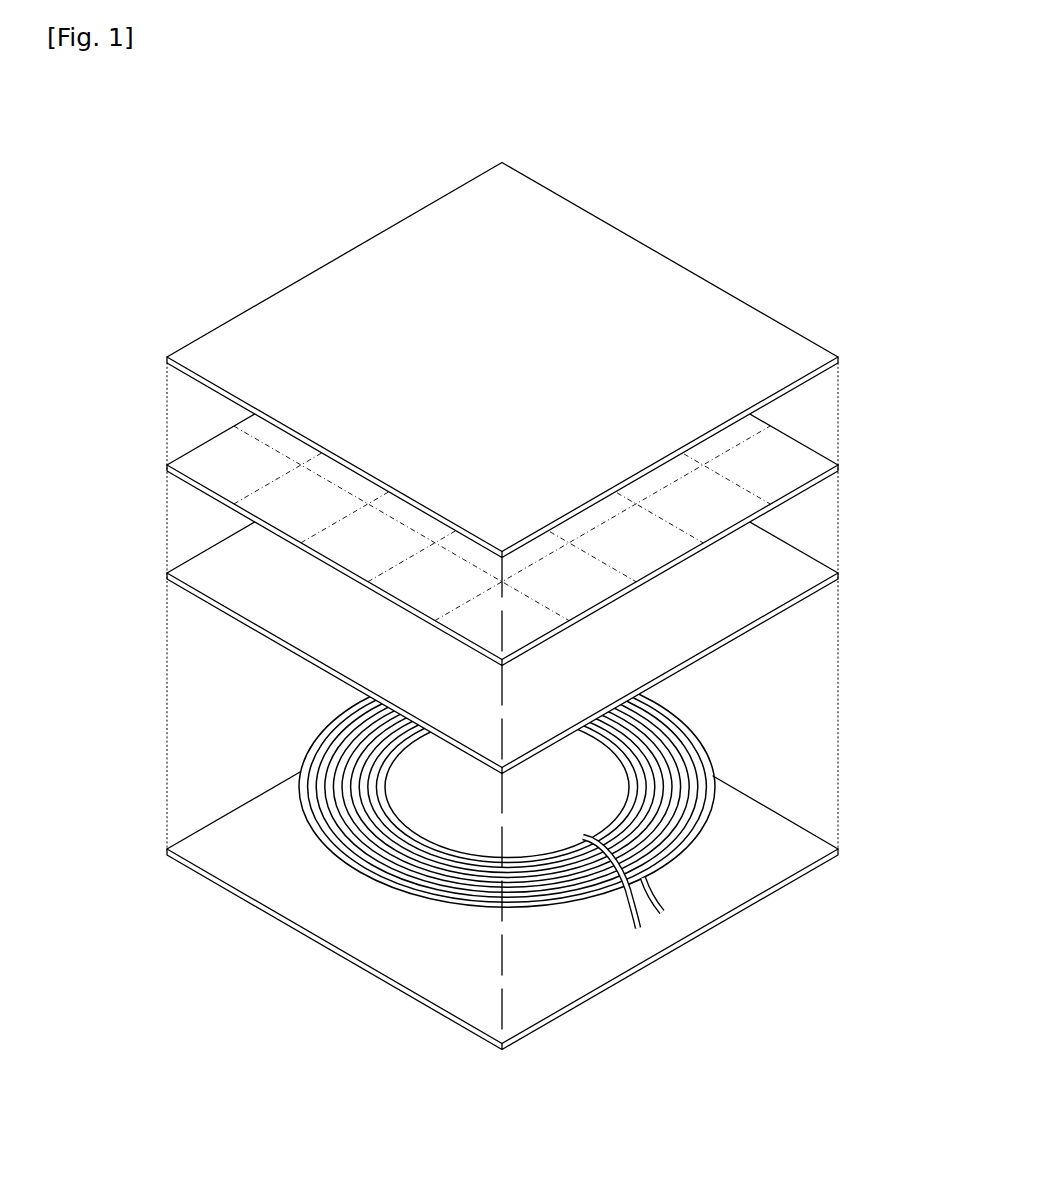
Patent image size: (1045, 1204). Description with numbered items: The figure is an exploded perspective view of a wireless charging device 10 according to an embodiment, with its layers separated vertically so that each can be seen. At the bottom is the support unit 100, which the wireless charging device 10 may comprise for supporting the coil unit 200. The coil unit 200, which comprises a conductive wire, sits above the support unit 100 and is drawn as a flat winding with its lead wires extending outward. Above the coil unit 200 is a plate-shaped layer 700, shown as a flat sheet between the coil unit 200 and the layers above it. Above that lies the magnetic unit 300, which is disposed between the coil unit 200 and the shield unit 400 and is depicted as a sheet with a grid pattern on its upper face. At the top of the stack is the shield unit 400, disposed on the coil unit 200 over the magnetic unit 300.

The wireless charging device 10 is at (506, 115).
The support unit 100 is at (802, 837).
The coil unit 200 is at (690, 733).
The intermediate plate 700 is at (803, 568).
The magnetic unit 300 is at (803, 450).
The shield unit 400 is at (803, 353).